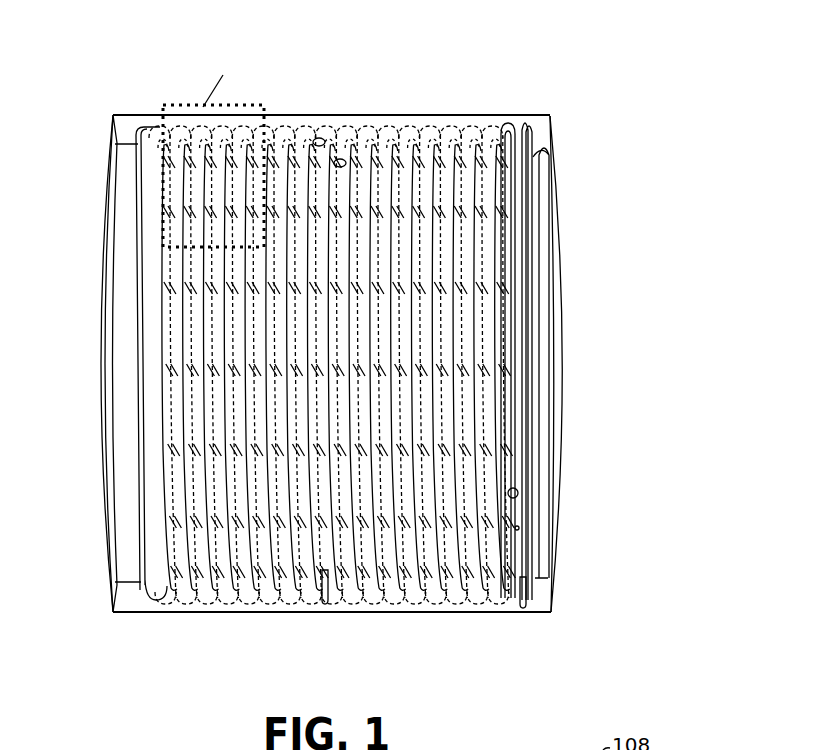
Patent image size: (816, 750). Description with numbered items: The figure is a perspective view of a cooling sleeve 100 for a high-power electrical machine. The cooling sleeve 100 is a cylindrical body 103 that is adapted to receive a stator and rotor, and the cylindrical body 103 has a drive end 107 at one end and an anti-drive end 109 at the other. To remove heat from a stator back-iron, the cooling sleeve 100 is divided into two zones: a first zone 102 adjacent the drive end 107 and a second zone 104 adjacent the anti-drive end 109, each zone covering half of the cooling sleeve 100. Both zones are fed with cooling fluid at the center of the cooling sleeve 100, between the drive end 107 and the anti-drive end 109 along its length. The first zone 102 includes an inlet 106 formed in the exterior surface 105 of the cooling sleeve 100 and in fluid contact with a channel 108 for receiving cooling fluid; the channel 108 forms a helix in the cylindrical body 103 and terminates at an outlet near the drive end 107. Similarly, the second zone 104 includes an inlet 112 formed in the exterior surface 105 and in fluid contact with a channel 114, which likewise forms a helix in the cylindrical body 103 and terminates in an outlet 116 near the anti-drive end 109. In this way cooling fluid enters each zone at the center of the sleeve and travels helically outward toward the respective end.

The cooling sleeve 100 is at (466, 44).
The first zone 102 is at (325, 620).
The cylindrical body 103 is at (108, 128).
The second zone 104 is at (532, 620).
The exterior surface 105 is at (533, 157).
The inlet 106 is at (326, 142).
The drive end 107 is at (84, 377).
The channel 108 is at (323, 136).
The anti-drive end 109 is at (589, 401).
The inlet 112 is at (347, 161).
The channel 114 is at (340, 193).
The outlet 116 is at (520, 494).